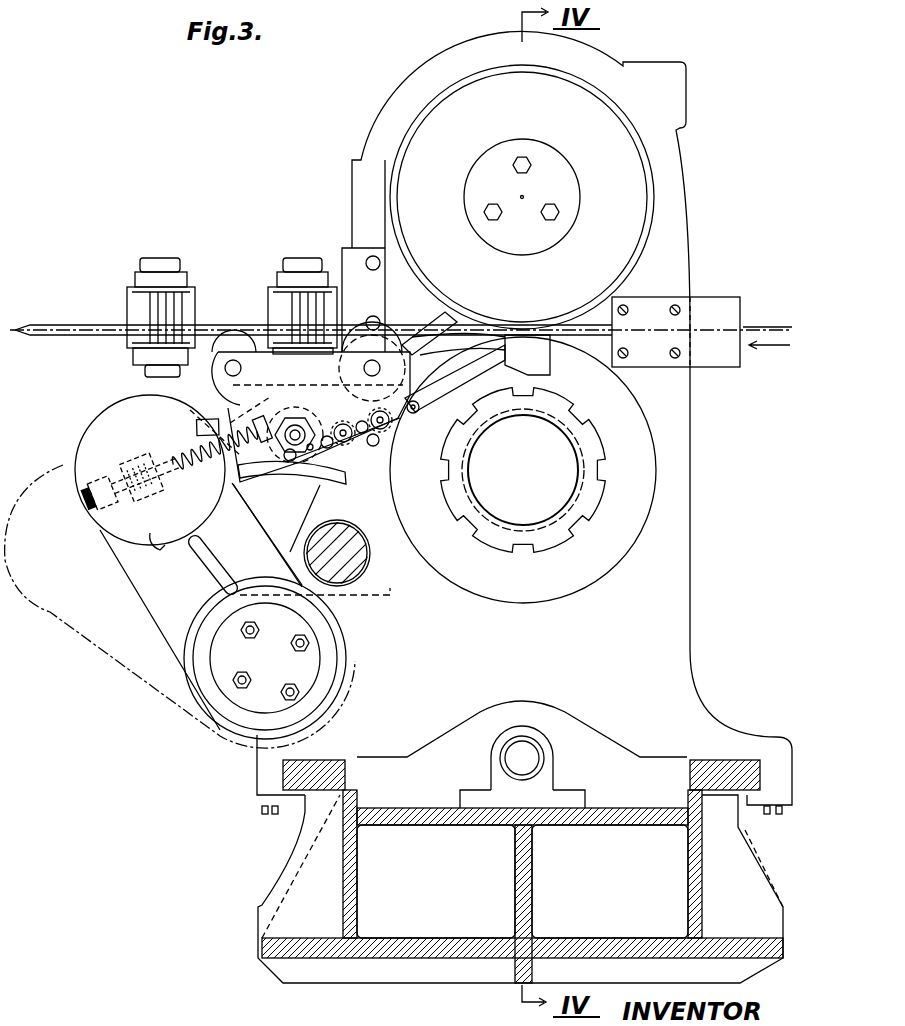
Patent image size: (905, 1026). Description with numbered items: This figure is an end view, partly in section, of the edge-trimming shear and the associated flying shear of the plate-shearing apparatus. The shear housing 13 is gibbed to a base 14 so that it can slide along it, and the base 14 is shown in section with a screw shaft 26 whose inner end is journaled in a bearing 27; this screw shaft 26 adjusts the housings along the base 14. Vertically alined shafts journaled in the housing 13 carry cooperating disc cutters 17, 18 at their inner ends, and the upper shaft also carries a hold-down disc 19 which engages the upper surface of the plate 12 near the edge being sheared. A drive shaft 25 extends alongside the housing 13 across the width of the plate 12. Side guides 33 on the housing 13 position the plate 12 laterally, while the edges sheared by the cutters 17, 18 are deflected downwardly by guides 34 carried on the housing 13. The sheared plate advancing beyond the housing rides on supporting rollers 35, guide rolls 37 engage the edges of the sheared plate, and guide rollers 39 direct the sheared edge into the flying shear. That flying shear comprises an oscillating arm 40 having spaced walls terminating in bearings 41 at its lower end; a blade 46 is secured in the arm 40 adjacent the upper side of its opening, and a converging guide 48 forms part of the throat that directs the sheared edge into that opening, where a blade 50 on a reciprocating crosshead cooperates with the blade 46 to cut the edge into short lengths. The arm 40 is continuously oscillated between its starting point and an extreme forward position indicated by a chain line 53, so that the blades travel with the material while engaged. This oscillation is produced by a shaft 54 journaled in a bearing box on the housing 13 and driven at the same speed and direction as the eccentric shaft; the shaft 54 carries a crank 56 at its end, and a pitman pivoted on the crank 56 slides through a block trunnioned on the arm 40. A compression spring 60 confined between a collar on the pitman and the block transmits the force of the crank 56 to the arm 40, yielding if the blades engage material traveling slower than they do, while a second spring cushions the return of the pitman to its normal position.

The plate 12 is at (752, 325).
The housing 13 is at (676, 228).
The base 14 is at (345, 852).
The disc cutter 17 is at (650, 155).
The disc cutter 18 is at (656, 475).
The hold-down disc 19 is at (636, 180).
The shaft 25 is at (348, 552).
The screw shaft 26 is at (544, 764).
The bearing 27 is at (500, 762).
The side guides 33 is at (712, 305).
The guides 34 is at (430, 345).
The supporting rollers 35 is at (357, 332).
The guide rolls 37 is at (278, 300).
The guide rollers 39 is at (333, 445).
The oscillating arm 40 is at (160, 612).
The bearings 41 is at (343, 658).
The blade 46 is at (135, 440).
The converging guide 48 is at (345, 483).
The blade 50 is at (152, 538).
The chain line 53 is at (63, 628).
The shaft 54 is at (311, 378).
The crank 56 is at (300, 435).
The compression spring 60 is at (203, 540).